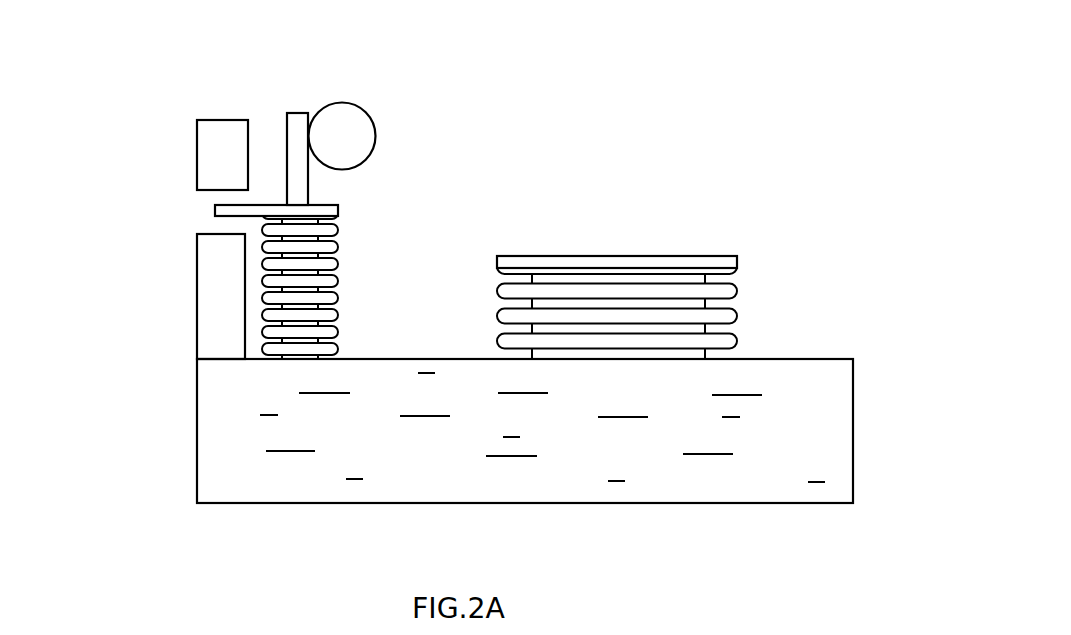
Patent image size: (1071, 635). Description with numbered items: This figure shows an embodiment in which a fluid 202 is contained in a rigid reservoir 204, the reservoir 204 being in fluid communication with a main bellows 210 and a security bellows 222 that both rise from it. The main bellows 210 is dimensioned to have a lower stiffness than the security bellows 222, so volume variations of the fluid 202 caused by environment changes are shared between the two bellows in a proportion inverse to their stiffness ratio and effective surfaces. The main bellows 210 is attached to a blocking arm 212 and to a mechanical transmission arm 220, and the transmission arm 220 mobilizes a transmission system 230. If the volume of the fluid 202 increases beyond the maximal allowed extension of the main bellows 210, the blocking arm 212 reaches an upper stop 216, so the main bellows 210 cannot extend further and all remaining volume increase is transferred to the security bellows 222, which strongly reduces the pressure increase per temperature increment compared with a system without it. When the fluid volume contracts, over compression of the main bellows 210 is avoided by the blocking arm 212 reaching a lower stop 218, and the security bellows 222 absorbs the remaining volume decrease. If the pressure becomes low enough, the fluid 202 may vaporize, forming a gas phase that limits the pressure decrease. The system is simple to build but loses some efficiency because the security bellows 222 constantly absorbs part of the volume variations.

The fluid 202 is at (795, 434).
The rigid reservoir 204 is at (197, 431).
The main bellows 210 is at (325, 299).
The blocking arm 212 is at (215, 210).
The upper stop 216 is at (202, 154).
The lower stop 218 is at (197, 298).
The mechanical transmission arm 220 is at (305, 189).
The security bellows 222 is at (737, 288).
The transmission system 230 is at (342, 137).